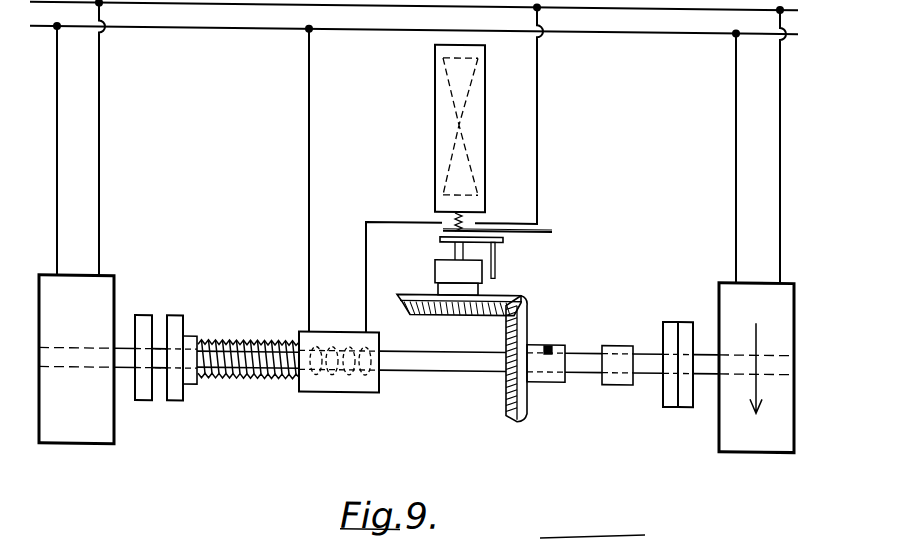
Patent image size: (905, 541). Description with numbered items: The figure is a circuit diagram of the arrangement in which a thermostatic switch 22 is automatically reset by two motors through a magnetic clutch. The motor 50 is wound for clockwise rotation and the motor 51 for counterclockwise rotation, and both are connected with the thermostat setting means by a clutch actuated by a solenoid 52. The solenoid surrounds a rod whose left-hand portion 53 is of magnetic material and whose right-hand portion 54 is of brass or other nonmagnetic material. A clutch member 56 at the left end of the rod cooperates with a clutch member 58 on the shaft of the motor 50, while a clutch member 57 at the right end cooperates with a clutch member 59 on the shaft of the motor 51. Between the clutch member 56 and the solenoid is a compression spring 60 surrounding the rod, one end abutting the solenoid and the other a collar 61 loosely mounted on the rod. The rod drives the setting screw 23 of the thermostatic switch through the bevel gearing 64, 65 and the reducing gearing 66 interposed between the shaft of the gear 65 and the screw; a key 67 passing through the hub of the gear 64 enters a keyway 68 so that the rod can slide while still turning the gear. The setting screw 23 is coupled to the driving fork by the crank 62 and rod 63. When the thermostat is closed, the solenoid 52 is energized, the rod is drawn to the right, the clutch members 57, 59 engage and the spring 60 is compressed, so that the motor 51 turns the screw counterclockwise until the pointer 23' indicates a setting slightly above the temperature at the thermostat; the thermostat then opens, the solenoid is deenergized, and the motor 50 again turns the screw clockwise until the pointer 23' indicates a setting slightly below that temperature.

The thermostatic switch 22 is at (435, 83).
The setting screw 23 is at (448, 204).
The pointer 23' is at (519, 239).
The motor 50 is at (93, 429).
The motor 51 is at (770, 428).
The solenoid 52 is at (362, 389).
The left-hand portion of rod 53 is at (268, 342).
The right-hand portion of rod 54 is at (445, 362).
The clutch member 56 is at (172, 396).
The clutch member 57 is at (668, 394).
The clutch member 58 is at (142, 398).
The clutch member 59 is at (688, 396).
The compression spring 60 is at (272, 369).
The collar 61 is at (200, 334).
The crank 62 is at (503, 234).
The rod 63 is at (497, 264).
The bevel gear 64 is at (527, 312).
The bevel gear 65 is at (418, 293).
The reducing gearing 66 is at (440, 260).
The key 67 is at (549, 340).
The keyway 68 is at (580, 351).